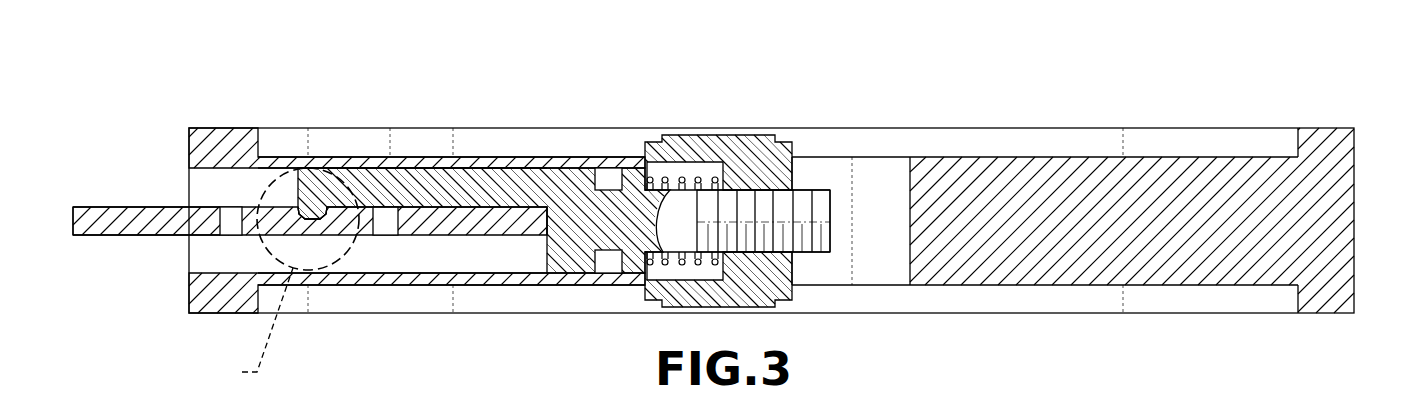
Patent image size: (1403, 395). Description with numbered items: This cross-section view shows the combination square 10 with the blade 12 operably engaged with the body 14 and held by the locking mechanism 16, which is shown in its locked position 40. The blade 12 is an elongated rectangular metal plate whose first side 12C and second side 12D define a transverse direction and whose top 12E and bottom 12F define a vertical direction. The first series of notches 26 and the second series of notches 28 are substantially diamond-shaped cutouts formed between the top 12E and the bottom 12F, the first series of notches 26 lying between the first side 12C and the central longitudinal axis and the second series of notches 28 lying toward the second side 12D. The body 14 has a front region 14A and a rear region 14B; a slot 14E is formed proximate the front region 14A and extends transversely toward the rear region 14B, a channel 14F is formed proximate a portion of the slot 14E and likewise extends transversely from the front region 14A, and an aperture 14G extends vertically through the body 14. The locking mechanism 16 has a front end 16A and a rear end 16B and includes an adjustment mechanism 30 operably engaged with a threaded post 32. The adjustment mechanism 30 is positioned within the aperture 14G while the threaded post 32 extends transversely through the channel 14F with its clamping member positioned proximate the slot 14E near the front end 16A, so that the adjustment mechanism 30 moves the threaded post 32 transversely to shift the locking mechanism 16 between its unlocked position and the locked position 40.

The combination square 10 is at (1032, 99).
The blade 12 is at (117, 246).
The first side 12C is at (72, 213).
The second side 12D is at (547, 223).
The top 12E is at (102, 205).
The bottom 12F is at (148, 237).
The body 14 is at (1206, 119).
The front region 14A is at (175, 140).
The rear region 14B is at (1370, 155).
The slot 14E is at (458, 228).
The channel 14F is at (383, 256).
The aperture 14G is at (869, 179).
The locking mechanism 16 is at (531, 166).
The locked position 40 is at (572, 213).
The front end 16A is at (293, 177).
The rear end 16B is at (842, 217).
The first series of notches 26 is at (234, 197).
The second series of notches 28 is at (387, 197).
The adjustment mechanism 30 is at (727, 137).
The threaded post 32 is at (802, 200).